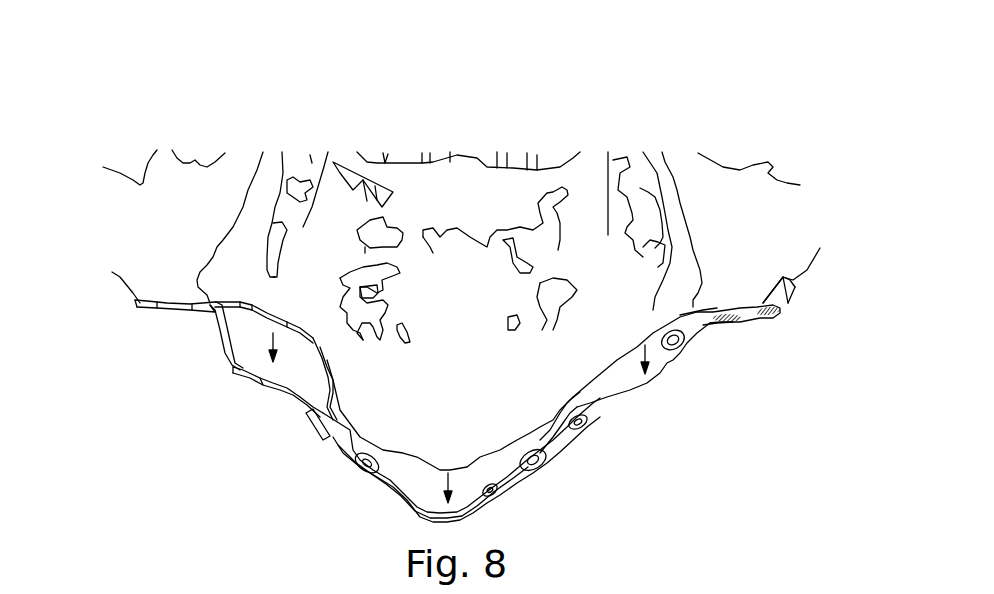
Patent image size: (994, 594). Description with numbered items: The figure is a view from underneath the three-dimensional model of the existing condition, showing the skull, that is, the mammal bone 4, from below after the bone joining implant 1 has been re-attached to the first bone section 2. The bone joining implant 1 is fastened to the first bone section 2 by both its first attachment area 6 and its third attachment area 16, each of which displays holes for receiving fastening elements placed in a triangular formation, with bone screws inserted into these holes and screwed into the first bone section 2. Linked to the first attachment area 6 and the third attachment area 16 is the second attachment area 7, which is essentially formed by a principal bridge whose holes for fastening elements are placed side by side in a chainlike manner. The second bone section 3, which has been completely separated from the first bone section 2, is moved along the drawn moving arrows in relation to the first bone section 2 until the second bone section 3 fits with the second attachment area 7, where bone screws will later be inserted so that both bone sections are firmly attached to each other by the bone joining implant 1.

The bone joining implant 1 is at (516, 417).
The first bone section 2 is at (803, 321).
The second bone section 3 is at (341, 456).
The mammal bone 4 is at (461, 269).
The first attachment area 6 is at (730, 371).
The second attachment area 7 is at (268, 377).
The third attachment area 16 is at (168, 351).